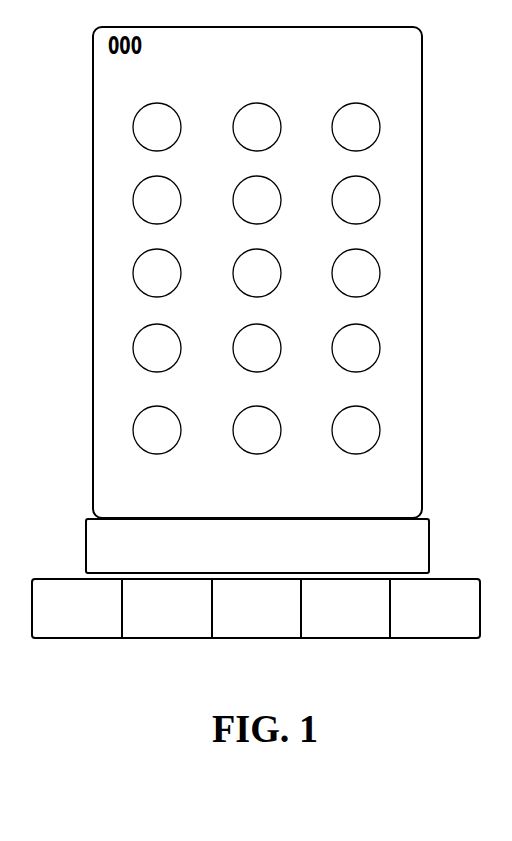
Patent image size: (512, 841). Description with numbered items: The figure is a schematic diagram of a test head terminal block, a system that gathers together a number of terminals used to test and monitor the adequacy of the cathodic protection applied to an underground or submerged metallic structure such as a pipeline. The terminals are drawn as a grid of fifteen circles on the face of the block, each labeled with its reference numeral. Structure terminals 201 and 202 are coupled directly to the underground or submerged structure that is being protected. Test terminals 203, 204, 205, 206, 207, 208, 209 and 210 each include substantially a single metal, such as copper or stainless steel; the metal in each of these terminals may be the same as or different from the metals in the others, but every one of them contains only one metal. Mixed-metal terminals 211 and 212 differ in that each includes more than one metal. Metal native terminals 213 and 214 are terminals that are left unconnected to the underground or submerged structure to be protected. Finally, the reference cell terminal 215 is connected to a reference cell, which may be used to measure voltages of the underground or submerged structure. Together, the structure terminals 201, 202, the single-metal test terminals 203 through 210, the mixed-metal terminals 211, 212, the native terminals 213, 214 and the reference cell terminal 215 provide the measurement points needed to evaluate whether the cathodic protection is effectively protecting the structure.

The structure terminal 201 is at (157, 430).
The structure terminal 202 is at (356, 430).
The test terminal 203 is at (157, 348).
The test terminal 204 is at (257, 348).
The test terminal 205 is at (356, 348).
The test terminal 206 is at (157, 273).
The test terminal 207 is at (257, 273).
The test terminal 208 is at (356, 273).
The test terminal 209 is at (157, 200).
The test terminal 210 is at (257, 200).
The mixed-metal terminal 211 is at (157, 127).
The mixed-metal terminal 212 is at (257, 127).
The metal native terminal 213 is at (356, 200).
The metal native terminal 214 is at (356, 127).
The reference cell terminal 215 is at (257, 430).